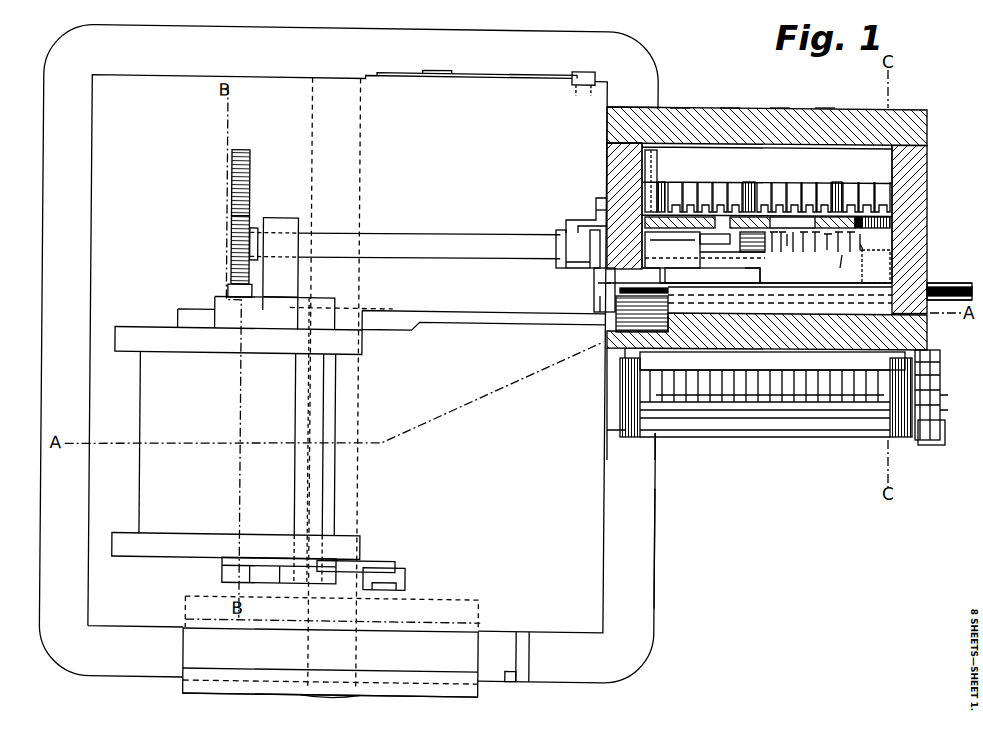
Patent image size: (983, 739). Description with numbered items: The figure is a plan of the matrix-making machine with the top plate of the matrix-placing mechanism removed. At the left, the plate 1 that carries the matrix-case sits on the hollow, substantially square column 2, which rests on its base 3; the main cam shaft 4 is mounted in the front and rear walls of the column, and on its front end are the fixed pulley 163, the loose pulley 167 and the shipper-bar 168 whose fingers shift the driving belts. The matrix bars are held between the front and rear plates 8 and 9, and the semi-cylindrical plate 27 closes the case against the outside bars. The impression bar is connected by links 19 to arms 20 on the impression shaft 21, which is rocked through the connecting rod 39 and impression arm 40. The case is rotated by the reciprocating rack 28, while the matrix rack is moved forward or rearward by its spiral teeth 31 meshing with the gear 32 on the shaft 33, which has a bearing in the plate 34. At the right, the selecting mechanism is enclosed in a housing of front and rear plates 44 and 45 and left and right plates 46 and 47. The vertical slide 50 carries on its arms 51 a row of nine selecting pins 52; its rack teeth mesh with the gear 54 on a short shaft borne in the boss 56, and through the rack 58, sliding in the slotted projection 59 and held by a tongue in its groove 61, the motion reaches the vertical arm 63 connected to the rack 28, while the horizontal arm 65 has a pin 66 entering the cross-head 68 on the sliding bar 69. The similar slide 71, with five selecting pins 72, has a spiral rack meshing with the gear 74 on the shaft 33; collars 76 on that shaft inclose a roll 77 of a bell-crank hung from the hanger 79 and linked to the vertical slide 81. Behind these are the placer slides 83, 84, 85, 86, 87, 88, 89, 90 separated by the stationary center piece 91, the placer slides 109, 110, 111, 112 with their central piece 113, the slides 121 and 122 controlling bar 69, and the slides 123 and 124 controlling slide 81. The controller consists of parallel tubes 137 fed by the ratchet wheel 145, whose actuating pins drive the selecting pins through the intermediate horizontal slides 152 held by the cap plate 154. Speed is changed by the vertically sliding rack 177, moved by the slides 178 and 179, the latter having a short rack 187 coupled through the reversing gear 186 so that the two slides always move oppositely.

The plate 1 is at (347, 349).
The column 2 is at (349, 354).
The base 3 is at (635, 548).
The shaft 4 is at (338, 692).
The front plate 8 is at (236, 546).
The rear plate 9 is at (238, 341).
The links 19 is at (230, 288).
The arms 20 is at (324, 293).
The shaft 21 is at (315, 441).
The semi-cylindrical plate 27 is at (167, 442).
The reciprocating rack 28 is at (446, 316).
The teeth 31 is at (253, 157).
The gear 32 is at (234, 243).
The shaft 33 is at (405, 246).
The plate 34 is at (281, 257).
The connecting rod 39 is at (410, 573).
The impression arm 40 is at (372, 558).
The front plate 44 is at (750, 332).
The rear plate 45 is at (905, 109).
The left plate 46 is at (620, 165).
The right plate 47 is at (900, 240).
The vertical slide 50 is at (858, 245).
The arms 51 is at (767, 223).
The selecting pins 52 is at (818, 252).
The gear 54 is at (893, 216).
The boss 56 is at (876, 266).
The rack 58 is at (594, 290).
The projection 59 is at (780, 298).
The groove 61 is at (935, 287).
The vertical arm 63 is at (594, 306).
The horizontal arm 65 is at (590, 278).
The pin 66 is at (712, 276).
The cross-head 68 is at (705, 260).
The vertically sliding bar 69 is at (732, 242).
The slide 71 is at (773, 253).
The selecting pins 72 is at (782, 252).
The gear 74 is at (745, 272).
The collars 76 is at (566, 265).
The roll 77 is at (560, 232).
The hanger 79 is at (600, 214).
The vertical slide 81 is at (672, 250).
The placer slide 83 is at (830, 182).
The placer slide 84 is at (880, 182).
The placer slide 85 is at (896, 168).
The placer slide 86 is at (893, 185).
The placer slide 87 is at (784, 182).
The placer slide 88 is at (824, 108).
The placer slide 89 is at (766, 182).
The placer slide 90 is at (800, 140).
The stationary center piece 91 is at (848, 140).
The placer slide 109 is at (780, 108).
The placer slide 110 is at (742, 182).
The placer slide 111 is at (745, 140).
The placer slide 112 is at (708, 182).
The central piece 113 is at (725, 182).
The slide 121 is at (733, 108).
The slide 122 is at (692, 182).
The slide 123 is at (695, 140).
The slide 124 is at (674, 182).
The tubes 137 is at (718, 437).
The ratchet wheel 145 is at (956, 405).
The intermediate horizontal slides 152 is at (841, 255).
The cap plate 154 is at (772, 360).
The fixed pulley 163 is at (237, 687).
The loose pulley 167 is at (331, 662).
The shipper-bar 168 is at (535, 638).
The vertically sliding rack 177 is at (605, 208).
The slide 178 is at (684, 108).
The slide 179 is at (618, 205).
The reversing gear 186 is at (640, 107).
The short rack 187 is at (612, 146).